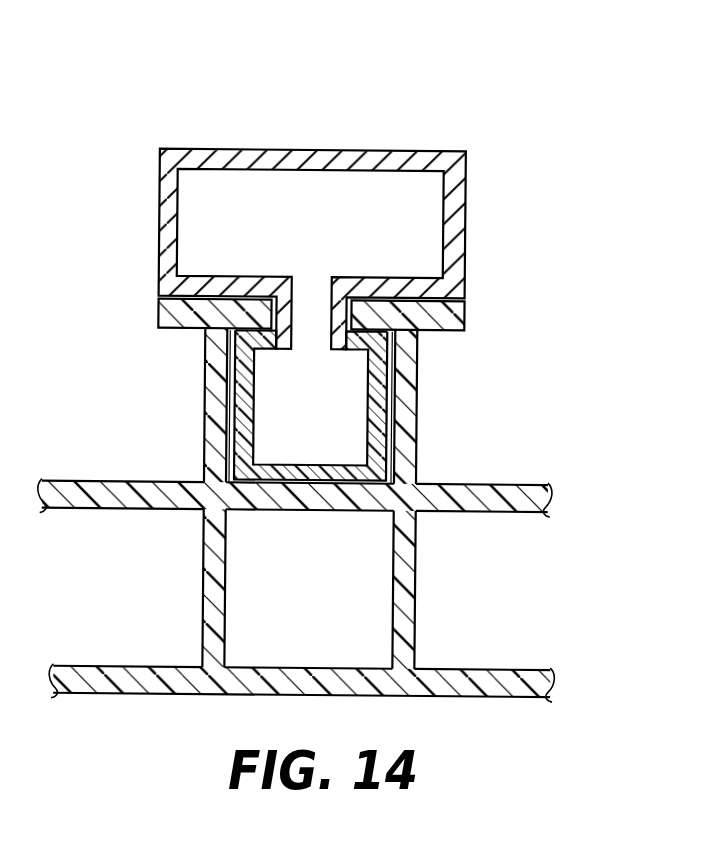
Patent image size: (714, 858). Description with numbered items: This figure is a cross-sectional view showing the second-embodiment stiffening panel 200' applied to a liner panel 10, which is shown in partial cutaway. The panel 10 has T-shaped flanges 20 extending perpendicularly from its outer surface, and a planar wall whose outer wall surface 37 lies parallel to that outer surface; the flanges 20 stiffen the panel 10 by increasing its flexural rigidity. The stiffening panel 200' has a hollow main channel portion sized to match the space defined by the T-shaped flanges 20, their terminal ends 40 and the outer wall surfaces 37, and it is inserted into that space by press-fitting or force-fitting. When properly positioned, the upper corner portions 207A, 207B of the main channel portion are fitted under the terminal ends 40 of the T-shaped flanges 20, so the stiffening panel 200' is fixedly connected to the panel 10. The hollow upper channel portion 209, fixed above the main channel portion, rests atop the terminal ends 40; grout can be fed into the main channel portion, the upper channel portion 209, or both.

The panel 10 is at (358, 515).
The T-shaped flanges 20 is at (213, 461).
The outer wall surface 37 is at (297, 484).
The terminal ends 40 is at (157, 312).
The stiffening panel 200' is at (320, 186).
The upper corner portion 207A is at (262, 341).
The upper corner portion 207B is at (352, 336).
The upper channel portion 209 is at (463, 195).